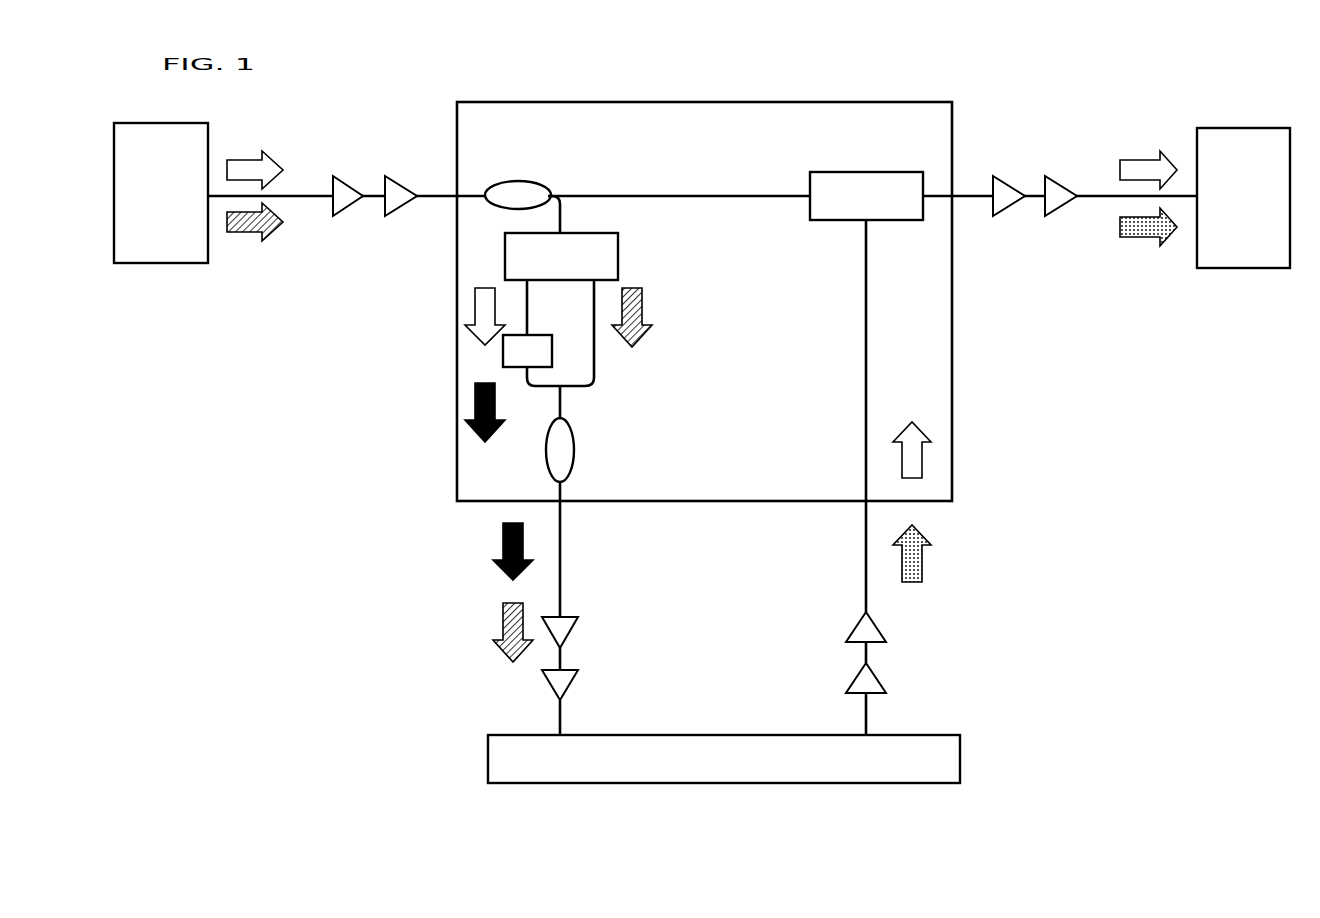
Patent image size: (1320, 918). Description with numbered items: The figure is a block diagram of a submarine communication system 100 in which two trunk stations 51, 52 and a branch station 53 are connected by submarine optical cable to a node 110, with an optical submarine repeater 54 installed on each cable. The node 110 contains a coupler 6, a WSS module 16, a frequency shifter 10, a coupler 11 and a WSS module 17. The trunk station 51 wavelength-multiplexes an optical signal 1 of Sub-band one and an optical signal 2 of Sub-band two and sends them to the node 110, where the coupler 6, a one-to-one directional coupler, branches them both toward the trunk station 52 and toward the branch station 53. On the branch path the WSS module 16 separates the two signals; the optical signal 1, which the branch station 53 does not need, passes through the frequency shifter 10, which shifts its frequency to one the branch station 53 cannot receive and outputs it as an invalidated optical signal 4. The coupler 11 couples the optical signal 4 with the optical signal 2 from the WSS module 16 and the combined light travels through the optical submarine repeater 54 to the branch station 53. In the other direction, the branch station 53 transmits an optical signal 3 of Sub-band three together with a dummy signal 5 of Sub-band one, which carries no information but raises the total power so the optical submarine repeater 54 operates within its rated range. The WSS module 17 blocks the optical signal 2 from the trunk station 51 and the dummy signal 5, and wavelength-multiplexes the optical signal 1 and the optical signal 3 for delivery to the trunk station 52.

The optical signal 1 is at (238, 157).
The optical signal 2 is at (238, 244).
The optical signal 3 is at (922, 565).
The optical signal 4 is at (500, 540).
The dummy signal 5 is at (922, 462).
The coupler 6 is at (516, 180).
The frequency shifter 10 is at (503, 352).
The coupler 11 is at (575, 460).
The WSS module 16 is at (620, 250).
The WSS module 17 is at (909, 148).
The trunk station 51 is at (148, 266).
The trunk station 52 is at (1228, 270).
The branch station 53 is at (962, 740).
The optical submarine repeater 54 is at (578, 635).
The submarine communication system 100 is at (868, 80).
The node 110 is at (952, 352).